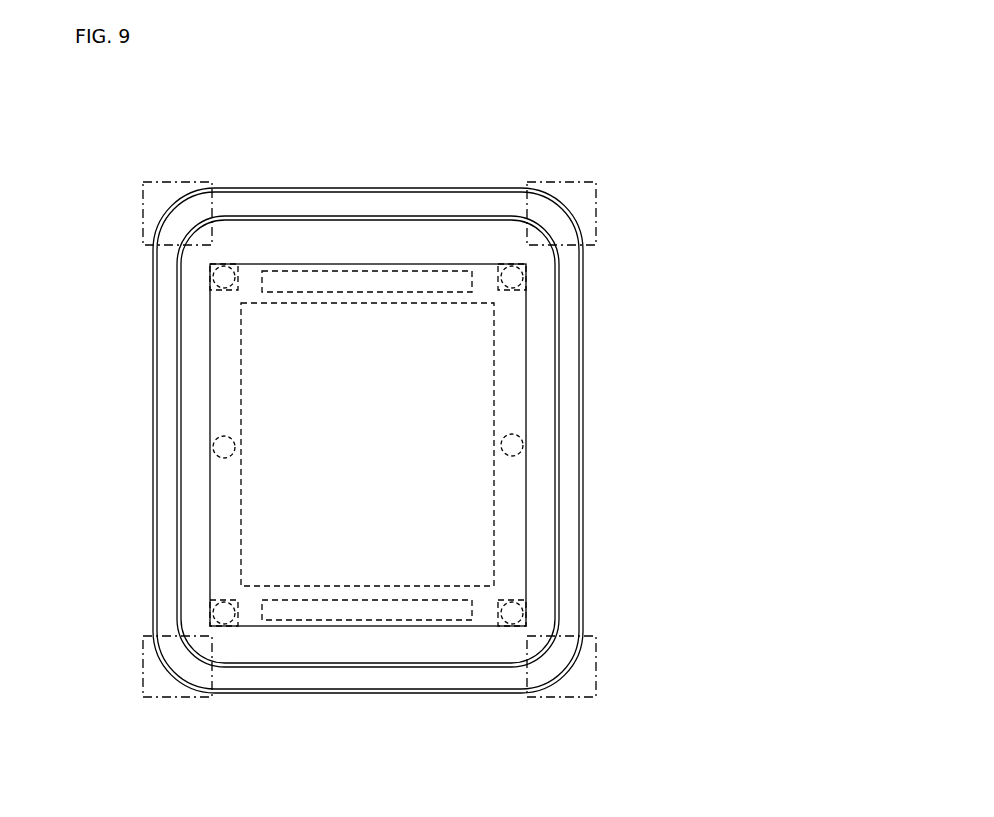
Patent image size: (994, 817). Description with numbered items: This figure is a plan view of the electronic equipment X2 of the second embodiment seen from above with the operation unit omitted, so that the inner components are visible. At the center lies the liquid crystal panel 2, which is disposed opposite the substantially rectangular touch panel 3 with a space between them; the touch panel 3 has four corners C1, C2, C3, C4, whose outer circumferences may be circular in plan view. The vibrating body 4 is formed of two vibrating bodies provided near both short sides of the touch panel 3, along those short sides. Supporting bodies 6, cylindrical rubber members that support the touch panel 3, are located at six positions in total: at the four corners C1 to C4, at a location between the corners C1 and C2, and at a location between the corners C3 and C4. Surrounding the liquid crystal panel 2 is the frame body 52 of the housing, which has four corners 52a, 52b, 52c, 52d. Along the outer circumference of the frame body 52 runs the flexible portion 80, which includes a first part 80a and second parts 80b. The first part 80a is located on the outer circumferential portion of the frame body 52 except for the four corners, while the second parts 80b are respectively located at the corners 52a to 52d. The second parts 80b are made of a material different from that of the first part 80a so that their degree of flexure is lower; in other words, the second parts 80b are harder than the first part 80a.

The liquid crystal panel 2 is at (482, 512).
The touch panel 3 is at (513, 363).
The vibrating body 4 is at (372, 282).
The supporting body 6 is at (213, 277).
The frame body 52 is at (388, 443).
The corner of the frame body 52a is at (180, 182).
The corner of the frame body 52b is at (178, 698).
The corner of the frame body 52c is at (566, 182).
The corner of the frame body 52d is at (563, 698).
The flexible portion 80 is at (397, 442).
The first part 80a is at (427, 207).
The second parts 80b is at (183, 217).
The corner of the touch panel C1 is at (224, 266).
The corner of the touch panel C2 is at (222, 601).
The corner of the touch panel C3 is at (512, 266).
The corner of the touch panel C4 is at (514, 601).
The electronic equipment X2 is at (596, 88).